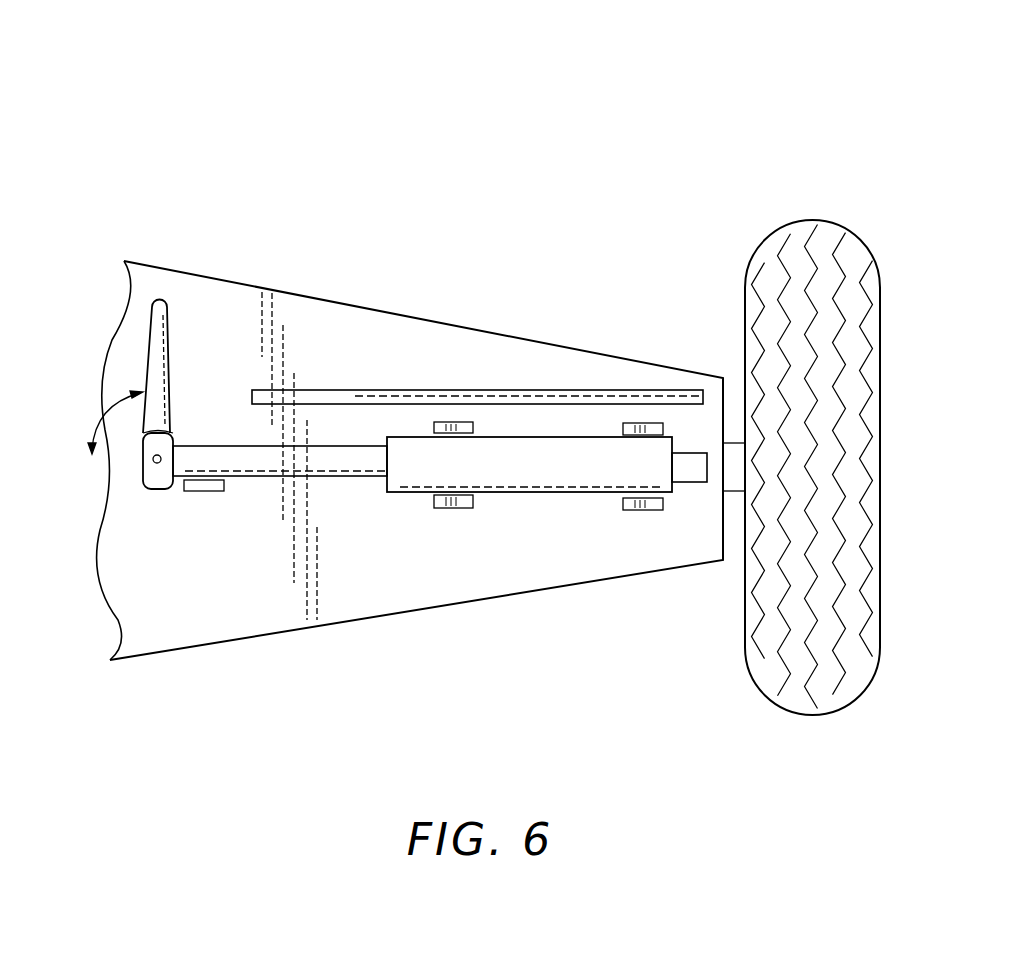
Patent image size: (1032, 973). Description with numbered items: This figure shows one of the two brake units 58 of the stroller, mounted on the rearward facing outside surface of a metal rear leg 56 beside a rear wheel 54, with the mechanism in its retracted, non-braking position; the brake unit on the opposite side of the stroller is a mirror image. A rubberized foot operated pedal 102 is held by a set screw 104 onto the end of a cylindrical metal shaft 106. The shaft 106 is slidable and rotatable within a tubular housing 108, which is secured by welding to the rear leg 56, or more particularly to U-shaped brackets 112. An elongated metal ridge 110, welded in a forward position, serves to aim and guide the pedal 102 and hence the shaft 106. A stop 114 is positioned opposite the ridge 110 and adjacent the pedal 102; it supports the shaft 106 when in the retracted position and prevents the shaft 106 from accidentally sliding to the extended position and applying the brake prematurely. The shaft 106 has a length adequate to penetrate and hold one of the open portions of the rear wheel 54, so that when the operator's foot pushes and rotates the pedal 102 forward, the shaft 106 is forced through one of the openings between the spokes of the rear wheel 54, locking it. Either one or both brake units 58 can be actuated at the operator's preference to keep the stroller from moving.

The rear wheel 54 is at (798, 220).
The rear leg 56 is at (349, 306).
The brake unit 58 is at (549, 161).
The pedal 102 is at (158, 342).
The set screw 104 is at (153, 460).
The shaft 106 is at (222, 447).
The tubular housing 108 is at (423, 477).
The ridge 110 is at (453, 359).
The U-shaped brackets 112 is at (465, 422).
The stop 114 is at (212, 490).